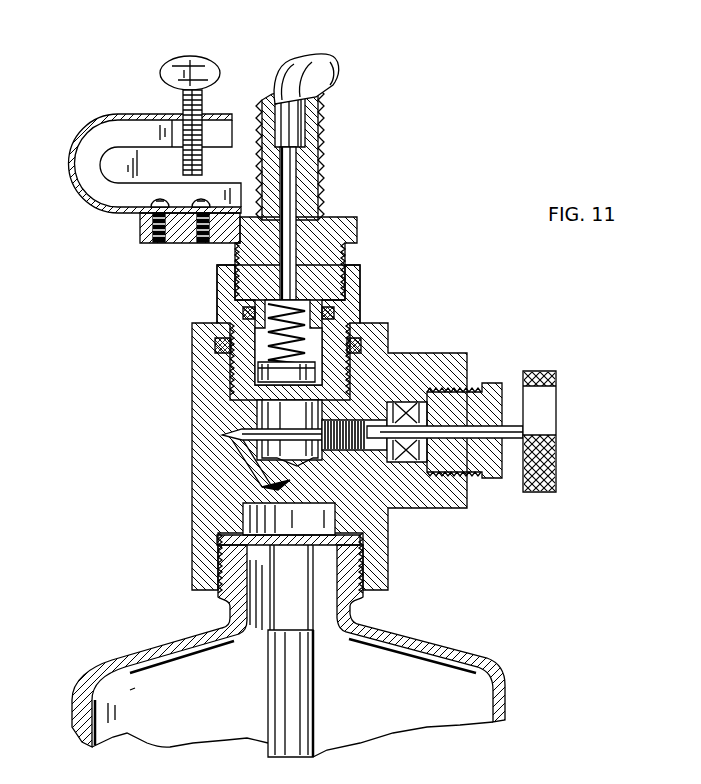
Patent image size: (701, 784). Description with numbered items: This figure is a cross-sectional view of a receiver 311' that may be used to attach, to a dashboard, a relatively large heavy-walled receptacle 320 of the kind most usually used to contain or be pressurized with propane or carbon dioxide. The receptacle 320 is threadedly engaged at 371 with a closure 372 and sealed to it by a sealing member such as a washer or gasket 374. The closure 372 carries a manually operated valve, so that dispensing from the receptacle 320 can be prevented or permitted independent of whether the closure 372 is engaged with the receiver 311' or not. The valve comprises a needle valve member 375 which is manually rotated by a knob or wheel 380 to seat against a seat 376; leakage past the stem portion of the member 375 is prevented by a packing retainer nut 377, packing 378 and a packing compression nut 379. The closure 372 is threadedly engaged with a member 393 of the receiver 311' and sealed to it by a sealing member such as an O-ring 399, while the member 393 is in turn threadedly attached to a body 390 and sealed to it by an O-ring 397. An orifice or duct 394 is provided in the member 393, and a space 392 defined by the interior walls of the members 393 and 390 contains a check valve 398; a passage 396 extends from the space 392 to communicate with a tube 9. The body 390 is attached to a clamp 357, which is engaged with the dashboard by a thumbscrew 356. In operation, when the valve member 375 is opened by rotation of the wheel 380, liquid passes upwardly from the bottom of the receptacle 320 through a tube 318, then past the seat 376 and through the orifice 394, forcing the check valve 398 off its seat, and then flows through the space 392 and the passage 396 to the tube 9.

The tube 9 is at (318, 60).
The thumbscrew 356 is at (196, 57).
The clamp 357 is at (128, 116).
The receiver 311' is at (172, 269).
The tube 318 is at (312, 696).
The receptacle 320 is at (160, 632).
The threaded engagement 371 is at (220, 558).
The closure 372 is at (192, 503).
The washer or gasket 374 is at (232, 530).
The needle valve member 375 is at (515, 426).
The seat 376 is at (248, 424).
The packing retainer nut 377 is at (390, 402).
The packing 378 is at (404, 402).
The packing compression nut 379 is at (500, 478).
The knob or wheel 380 is at (537, 371).
The body 390 is at (356, 222).
The space 392 is at (262, 353).
The member 393 is at (360, 285).
The orifice or duct 394 is at (258, 402).
The passage 396 is at (294, 233).
The O-ring 397 is at (243, 311).
The check valve 398 is at (316, 343).
The O-ring 399 is at (218, 342).